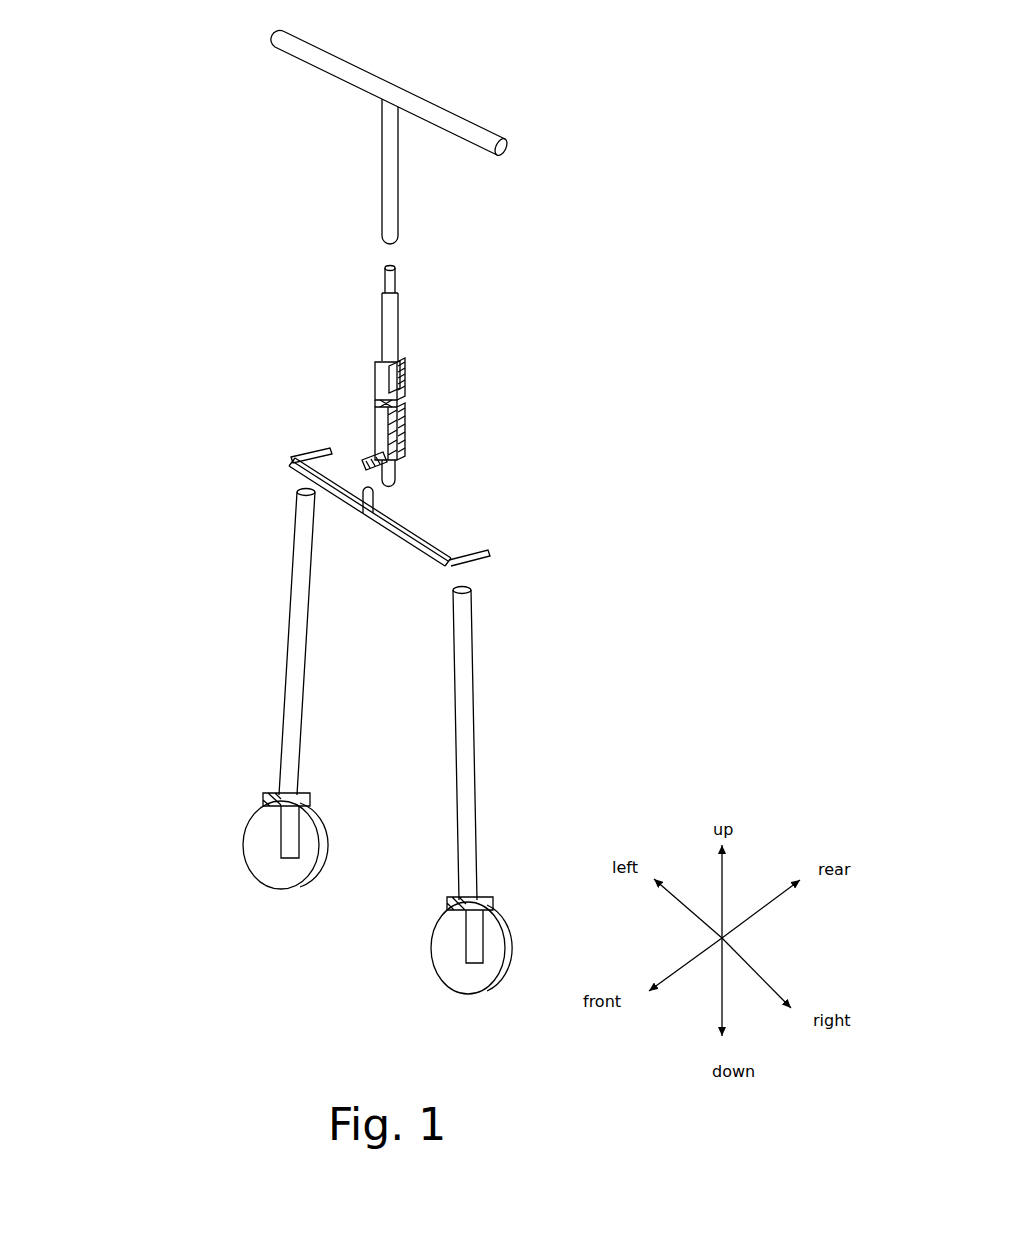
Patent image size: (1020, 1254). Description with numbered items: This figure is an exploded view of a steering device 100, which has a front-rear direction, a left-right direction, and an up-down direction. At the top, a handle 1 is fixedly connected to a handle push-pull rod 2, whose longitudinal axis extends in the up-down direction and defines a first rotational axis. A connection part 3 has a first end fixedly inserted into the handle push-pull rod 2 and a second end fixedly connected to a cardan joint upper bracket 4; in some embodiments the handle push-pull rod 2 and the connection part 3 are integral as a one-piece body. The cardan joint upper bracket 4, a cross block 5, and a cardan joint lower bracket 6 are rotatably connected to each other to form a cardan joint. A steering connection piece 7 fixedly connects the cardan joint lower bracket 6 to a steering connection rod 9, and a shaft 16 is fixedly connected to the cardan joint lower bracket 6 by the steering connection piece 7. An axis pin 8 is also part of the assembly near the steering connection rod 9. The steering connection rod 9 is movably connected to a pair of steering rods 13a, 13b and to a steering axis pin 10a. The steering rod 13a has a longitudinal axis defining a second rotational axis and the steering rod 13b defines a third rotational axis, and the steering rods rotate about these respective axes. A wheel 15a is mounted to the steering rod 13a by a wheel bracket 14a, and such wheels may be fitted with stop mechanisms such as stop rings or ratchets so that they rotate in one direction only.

The handle 1 is at (363, 82).
The handle push-pull rod 2 is at (390, 172).
The connection part 3 is at (388, 318).
The cardan joint upper bracket 4 is at (327, 319).
The cross block 5 is at (398, 388).
The cardan joint lower bracket 6 is at (399, 432).
The steering connection piece 7 is at (395, 452).
The shaft 16 is at (393, 478).
The axis pin 8 is at (375, 500).
The steering connection rod 9 is at (332, 481).
The steering axis pin 10a is at (288, 459).
The steering rod 13a is at (306, 581).
The steering rod 13b is at (466, 658).
The wheel bracket 14a is at (298, 825).
The wheel 15a is at (268, 862).
The steering device 100 is at (577, 604).